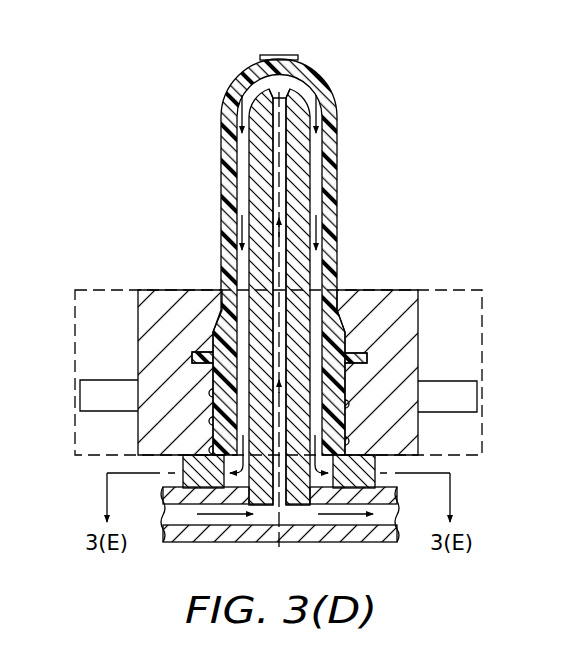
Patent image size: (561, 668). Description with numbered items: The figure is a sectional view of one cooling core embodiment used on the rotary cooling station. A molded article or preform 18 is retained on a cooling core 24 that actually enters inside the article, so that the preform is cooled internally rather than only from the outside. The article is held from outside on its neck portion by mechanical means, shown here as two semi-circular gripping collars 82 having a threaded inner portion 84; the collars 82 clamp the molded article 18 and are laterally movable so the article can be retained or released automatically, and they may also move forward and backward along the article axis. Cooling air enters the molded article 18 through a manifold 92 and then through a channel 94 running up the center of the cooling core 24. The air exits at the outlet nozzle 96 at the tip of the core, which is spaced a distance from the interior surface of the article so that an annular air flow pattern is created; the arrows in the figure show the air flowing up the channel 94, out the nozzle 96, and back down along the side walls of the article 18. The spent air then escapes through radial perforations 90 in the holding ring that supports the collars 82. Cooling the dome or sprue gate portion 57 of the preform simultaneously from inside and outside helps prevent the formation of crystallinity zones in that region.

The molded article 18 is at (330, 148).
The cooling core 24 is at (255, 155).
The sprue gate portion 57 is at (291, 55).
The gripping collar 82 is at (173, 290).
The threaded inner portion 84 is at (207, 393).
The radial perforation 90 is at (197, 482).
The manifold 92 is at (332, 520).
The channel 94 is at (282, 200).
The outlet nozzle 96 is at (275, 88).